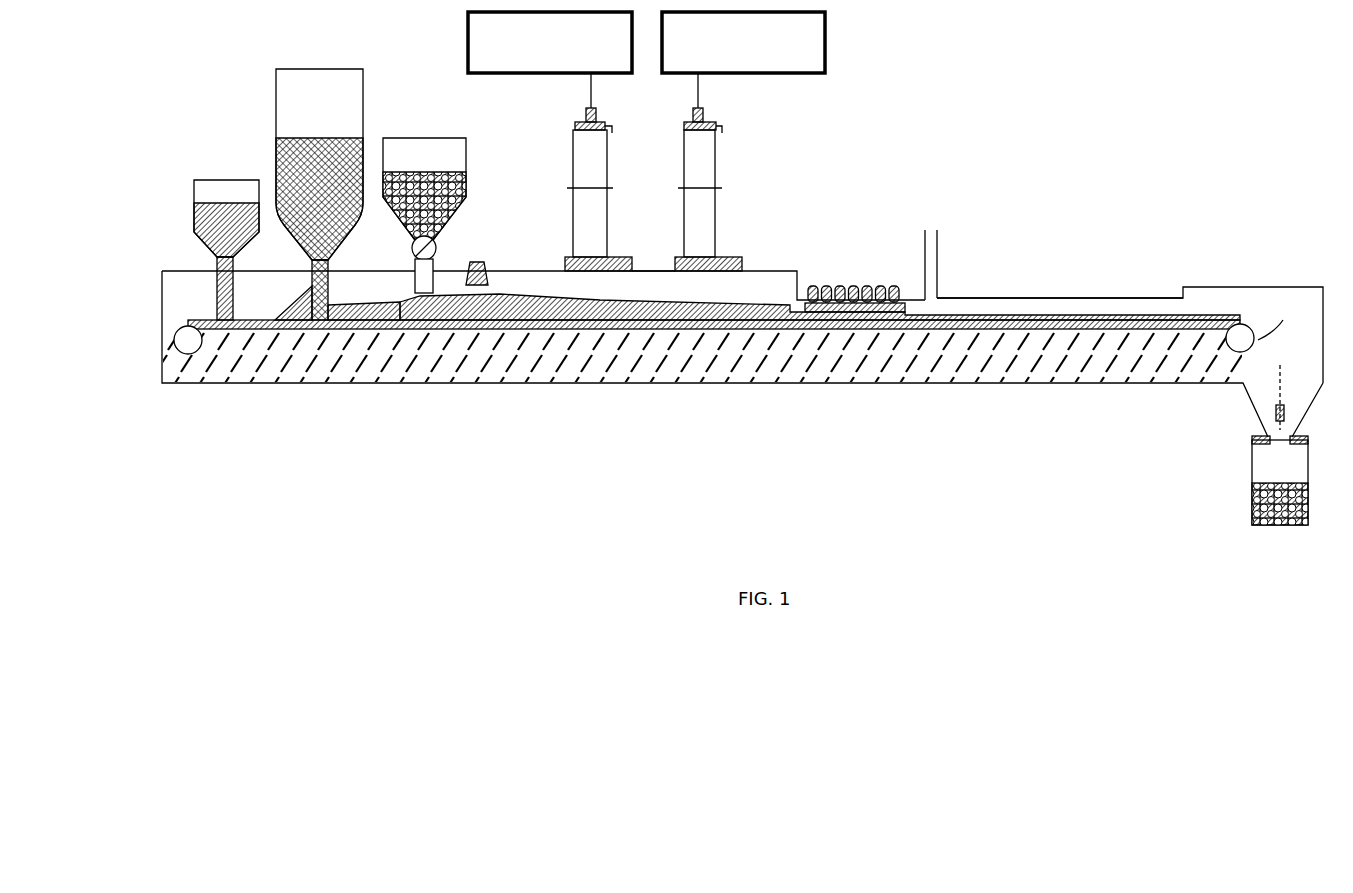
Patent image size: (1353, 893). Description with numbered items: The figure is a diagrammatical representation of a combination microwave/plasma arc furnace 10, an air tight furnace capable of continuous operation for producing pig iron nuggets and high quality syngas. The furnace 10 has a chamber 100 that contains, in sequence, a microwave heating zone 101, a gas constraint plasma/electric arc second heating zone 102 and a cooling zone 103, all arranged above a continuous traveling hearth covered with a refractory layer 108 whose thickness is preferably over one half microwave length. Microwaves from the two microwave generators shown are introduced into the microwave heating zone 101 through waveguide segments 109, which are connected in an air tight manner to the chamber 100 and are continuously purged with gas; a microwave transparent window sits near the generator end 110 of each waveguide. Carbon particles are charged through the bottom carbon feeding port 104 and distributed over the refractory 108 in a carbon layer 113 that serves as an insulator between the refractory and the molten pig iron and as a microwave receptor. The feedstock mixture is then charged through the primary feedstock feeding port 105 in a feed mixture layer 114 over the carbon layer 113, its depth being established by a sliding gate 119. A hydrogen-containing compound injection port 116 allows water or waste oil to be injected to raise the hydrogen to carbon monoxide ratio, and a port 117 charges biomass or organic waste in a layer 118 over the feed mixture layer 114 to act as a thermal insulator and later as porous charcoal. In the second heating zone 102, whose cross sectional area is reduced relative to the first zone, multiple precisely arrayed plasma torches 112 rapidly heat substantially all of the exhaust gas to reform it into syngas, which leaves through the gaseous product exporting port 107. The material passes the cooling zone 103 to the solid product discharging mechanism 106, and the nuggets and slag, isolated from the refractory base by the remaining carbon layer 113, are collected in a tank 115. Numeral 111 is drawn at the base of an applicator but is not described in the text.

The furnace 10 is at (177, 393).
The chamber 100 is at (175, 292).
The microwave heating zone 101 is at (652, 275).
The plasma/electric arc second heating zone 102 is at (910, 296).
The cooling zone 103 is at (1082, 298).
The bottom carbon feeding port 104 is at (232, 185).
The primary feedstock feeding port 105 is at (345, 85).
The solid product discharging mechanism 106 is at (1284, 320).
The gaseous product exporting port 107 is at (940, 282).
The refractory layer 108 is at (830, 383).
The waveguide segments 109 is at (573, 213).
The generator end 110 is at (590, 124).
The applicator base 111 is at (742, 257).
The plasma single or twin electrode torches 112 is at (830, 290).
The carbon layer 113 is at (272, 320).
The feed mixture layer 114 is at (688, 305).
The tank 115 is at (1288, 540).
The hydrogen-containing compound injection port 116 is at (480, 262).
The port for charging biomass or organic waste 117 is at (437, 148).
The biomass or organic waste layer 118 is at (518, 300).
The sliding gate 119 is at (340, 296).